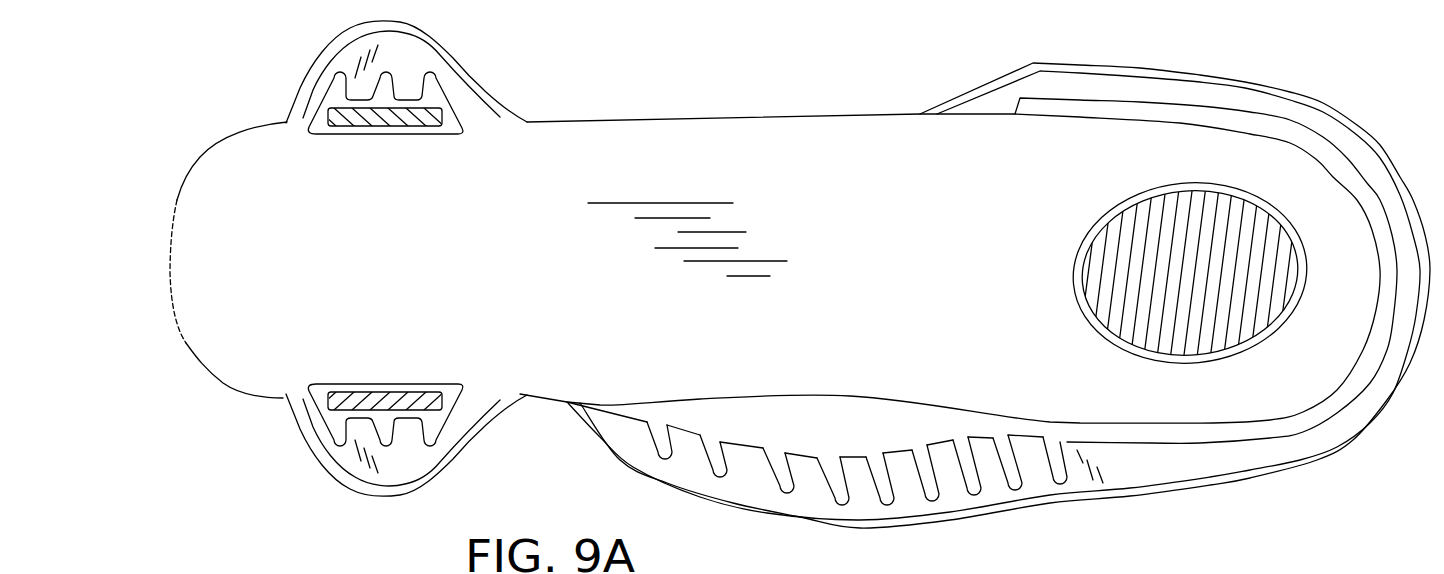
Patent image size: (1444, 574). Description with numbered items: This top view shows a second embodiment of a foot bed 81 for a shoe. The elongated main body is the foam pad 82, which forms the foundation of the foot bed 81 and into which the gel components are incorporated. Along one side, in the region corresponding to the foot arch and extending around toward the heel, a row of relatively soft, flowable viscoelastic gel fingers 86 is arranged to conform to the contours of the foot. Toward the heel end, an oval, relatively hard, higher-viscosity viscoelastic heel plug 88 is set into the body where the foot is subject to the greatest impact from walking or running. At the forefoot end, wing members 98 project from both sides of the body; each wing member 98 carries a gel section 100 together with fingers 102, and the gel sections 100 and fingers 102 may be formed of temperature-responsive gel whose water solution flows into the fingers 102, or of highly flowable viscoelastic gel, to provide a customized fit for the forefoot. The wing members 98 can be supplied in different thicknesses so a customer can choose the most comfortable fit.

The foot bed 81 is at (594, 460).
The foam pad 82 is at (1112, 466).
The viscoelastic gel fingers 86 is at (787, 488).
The heel plug insert 88 is at (1239, 220).
The wing members 98 is at (480, 90).
The gel sections 100 is at (437, 110).
The fingers 102 is at (335, 80).